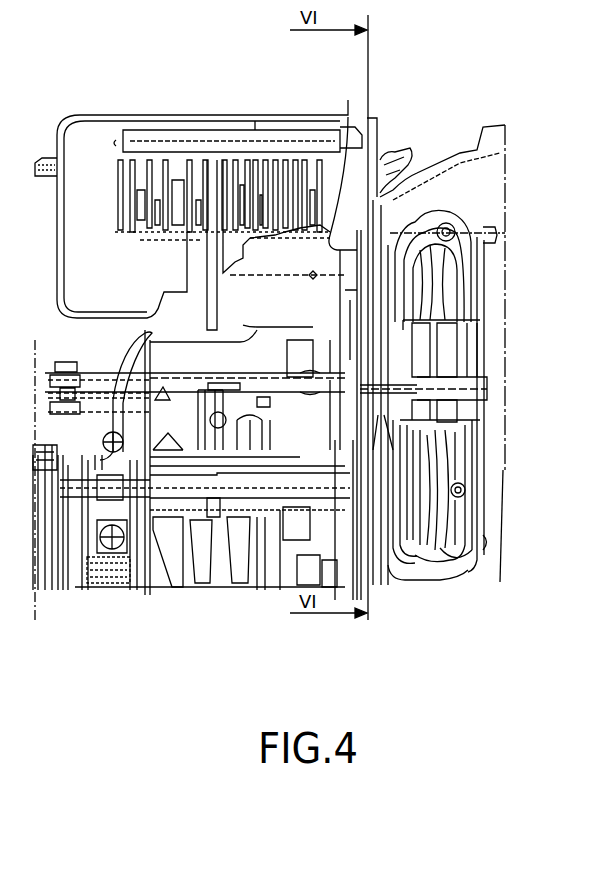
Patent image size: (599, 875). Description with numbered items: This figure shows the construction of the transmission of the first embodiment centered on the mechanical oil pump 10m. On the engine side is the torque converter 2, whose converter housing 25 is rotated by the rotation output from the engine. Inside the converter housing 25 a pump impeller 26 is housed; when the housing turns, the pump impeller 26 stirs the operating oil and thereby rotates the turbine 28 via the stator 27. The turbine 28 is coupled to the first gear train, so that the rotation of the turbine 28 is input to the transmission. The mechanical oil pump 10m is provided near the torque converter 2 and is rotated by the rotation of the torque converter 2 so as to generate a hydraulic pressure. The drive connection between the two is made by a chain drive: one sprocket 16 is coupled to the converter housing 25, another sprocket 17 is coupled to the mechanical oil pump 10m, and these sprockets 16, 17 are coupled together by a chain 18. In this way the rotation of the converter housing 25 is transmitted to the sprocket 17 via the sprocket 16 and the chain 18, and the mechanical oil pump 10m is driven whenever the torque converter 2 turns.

The mechanical oil pump 10m is at (350, 102).
The torque converter 2 is at (485, 267).
The sprocket 17 is at (400, 160).
The converter housing 25 is at (447, 212).
The chain 18 is at (483, 320).
The sprocket 16 is at (457, 400).
The pump impeller 26 is at (410, 533).
The stator 27 is at (420, 537).
The turbine 28 is at (440, 547).